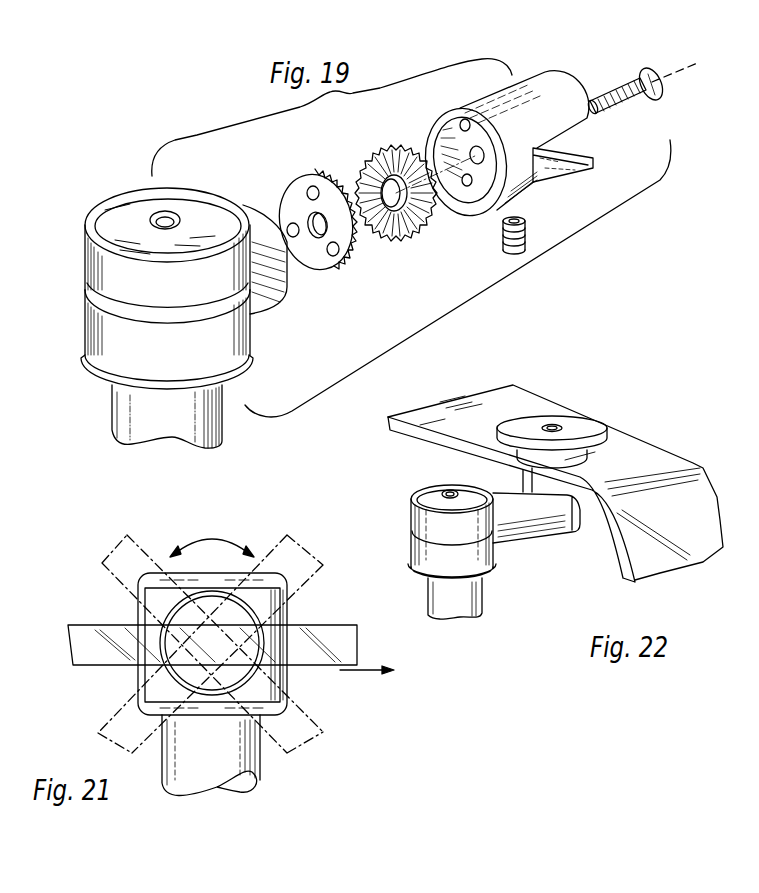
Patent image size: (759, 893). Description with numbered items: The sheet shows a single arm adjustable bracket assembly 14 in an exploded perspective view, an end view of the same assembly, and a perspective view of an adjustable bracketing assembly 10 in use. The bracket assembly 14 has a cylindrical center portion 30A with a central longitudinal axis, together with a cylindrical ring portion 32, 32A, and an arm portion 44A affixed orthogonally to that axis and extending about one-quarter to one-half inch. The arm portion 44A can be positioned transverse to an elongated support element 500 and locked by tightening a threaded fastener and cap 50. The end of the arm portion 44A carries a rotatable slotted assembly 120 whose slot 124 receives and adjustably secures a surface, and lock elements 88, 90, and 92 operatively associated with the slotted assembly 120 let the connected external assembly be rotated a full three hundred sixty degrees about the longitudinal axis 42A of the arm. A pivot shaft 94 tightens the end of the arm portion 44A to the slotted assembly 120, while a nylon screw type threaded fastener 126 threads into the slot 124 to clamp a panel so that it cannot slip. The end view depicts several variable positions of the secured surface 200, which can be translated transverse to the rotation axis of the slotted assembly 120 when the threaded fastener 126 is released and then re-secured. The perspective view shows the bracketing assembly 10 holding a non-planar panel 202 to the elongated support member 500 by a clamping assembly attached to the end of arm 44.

In FIG. 22, the adjustable bracketing assembly 10 is at (398, 498).
In FIG. 21, the adjustable bracket assembly 14 is at (105, 610).
In FIG. 19, the cylindrical center portion 30A is at (15, 491).
In FIG. 19, the cylindrical ring portion 32 is at (242, 333).
In FIG. 19, the cylindrical ring portion 32A is at (100, 272).
In FIG. 19, the longitudinal axis 42A is at (660, 65).
In FIG. 22, the arm 44 is at (523, 523).
In FIG. 19, the arm portion 44A is at (277, 300).
In FIG. 19, the cap 50 is at (170, 197).
In FIG. 19, the lock element 88 is at (447, 143).
In FIG. 19, the lock element 90 is at (290, 184).
In FIG. 19, the lock element 92 is at (327, 255).
In FIG. 19, the pivot shaft 94 is at (620, 82).
In FIG. 19, the slotted assembly 120 is at (457, 107).
In FIG. 21, the slotted assembly 120 is at (243, 672).
In FIG. 19, the slot 124 is at (580, 145).
In FIG. 21, the slot 124 is at (284, 620).
In FIG. 19, the threaded fastener 126 is at (527, 226).
In FIG. 21, the secured surface 200 is at (335, 652).
In FIG. 22, the non-planar panel 202 is at (527, 403).
In FIG. 19, the elongated support member 500 is at (212, 410).
In FIG. 22, the elongated support member 500 is at (467, 593).
In FIG. 21, the elongated support member 500 is at (257, 760).